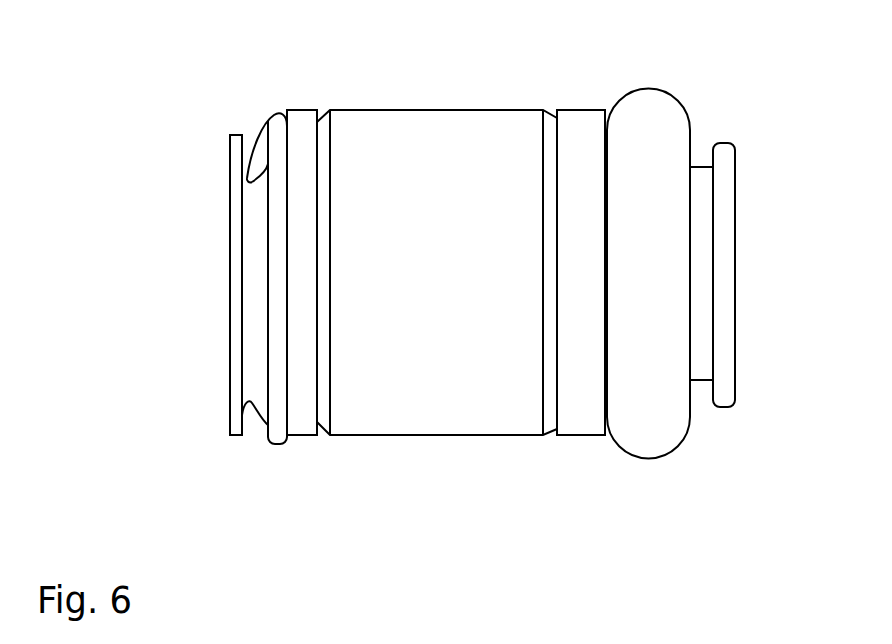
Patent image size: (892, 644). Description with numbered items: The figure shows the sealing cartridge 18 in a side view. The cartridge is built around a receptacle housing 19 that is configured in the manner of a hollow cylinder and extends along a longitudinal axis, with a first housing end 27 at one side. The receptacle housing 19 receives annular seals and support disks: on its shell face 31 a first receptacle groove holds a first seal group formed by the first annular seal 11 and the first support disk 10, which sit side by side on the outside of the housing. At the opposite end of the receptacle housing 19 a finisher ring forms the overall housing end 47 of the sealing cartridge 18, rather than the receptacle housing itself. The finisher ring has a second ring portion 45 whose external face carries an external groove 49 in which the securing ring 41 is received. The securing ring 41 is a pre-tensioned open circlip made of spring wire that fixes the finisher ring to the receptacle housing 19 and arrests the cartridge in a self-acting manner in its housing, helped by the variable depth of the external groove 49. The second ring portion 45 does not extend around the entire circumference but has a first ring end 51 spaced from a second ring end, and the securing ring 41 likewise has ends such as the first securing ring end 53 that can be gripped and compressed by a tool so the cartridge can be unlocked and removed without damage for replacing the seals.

The first support disk 10 is at (575, 140).
The first annular seal 11 is at (653, 133).
The sealing cartridge 18 is at (768, 160).
The receptacle housing 19 is at (478, 152).
The first housing end 27 is at (734, 265).
The shell face 31 is at (372, 109).
The securing ring 41 is at (277, 434).
The second ring portion 45 is at (284, 80).
The overall housing end 47 is at (230, 270).
The external groove 49 is at (255, 371).
The first ring end 51 is at (242, 151).
The first securing ring end 53 is at (248, 177).